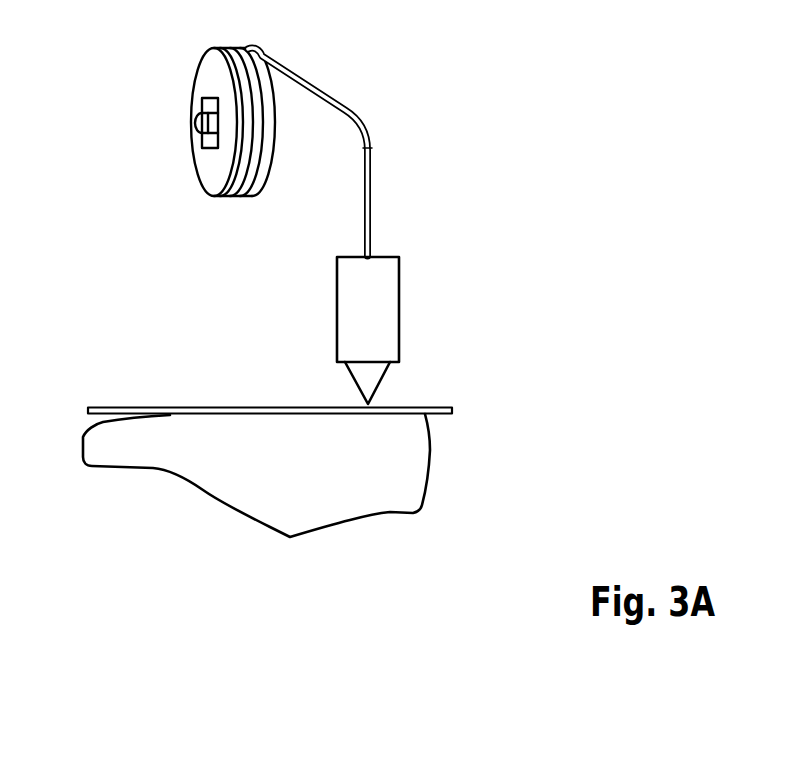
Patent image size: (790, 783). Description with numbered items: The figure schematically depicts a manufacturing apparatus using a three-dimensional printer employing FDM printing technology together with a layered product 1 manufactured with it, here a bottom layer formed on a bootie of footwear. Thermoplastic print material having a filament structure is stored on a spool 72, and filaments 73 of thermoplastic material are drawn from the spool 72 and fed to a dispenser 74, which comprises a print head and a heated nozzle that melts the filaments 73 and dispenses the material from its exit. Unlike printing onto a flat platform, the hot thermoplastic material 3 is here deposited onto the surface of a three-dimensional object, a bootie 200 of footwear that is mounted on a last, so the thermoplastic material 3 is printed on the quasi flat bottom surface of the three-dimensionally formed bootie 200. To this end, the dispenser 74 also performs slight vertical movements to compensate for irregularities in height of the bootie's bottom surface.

The layered product 1 is at (107, 340).
The thermoplastic material 3 is at (347, 400).
The spool 72 is at (210, 75).
The filaments 73 is at (373, 188).
The dispenser 74 is at (400, 307).
The bootie 200 is at (430, 455).